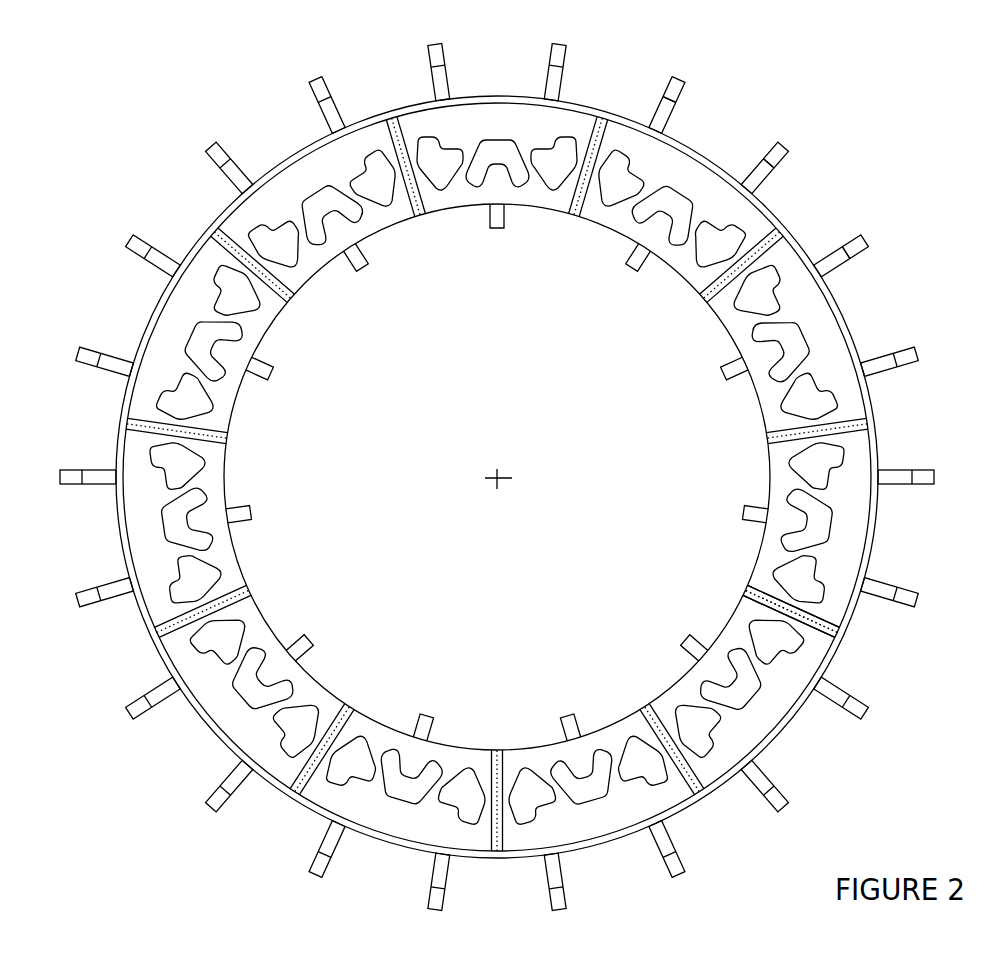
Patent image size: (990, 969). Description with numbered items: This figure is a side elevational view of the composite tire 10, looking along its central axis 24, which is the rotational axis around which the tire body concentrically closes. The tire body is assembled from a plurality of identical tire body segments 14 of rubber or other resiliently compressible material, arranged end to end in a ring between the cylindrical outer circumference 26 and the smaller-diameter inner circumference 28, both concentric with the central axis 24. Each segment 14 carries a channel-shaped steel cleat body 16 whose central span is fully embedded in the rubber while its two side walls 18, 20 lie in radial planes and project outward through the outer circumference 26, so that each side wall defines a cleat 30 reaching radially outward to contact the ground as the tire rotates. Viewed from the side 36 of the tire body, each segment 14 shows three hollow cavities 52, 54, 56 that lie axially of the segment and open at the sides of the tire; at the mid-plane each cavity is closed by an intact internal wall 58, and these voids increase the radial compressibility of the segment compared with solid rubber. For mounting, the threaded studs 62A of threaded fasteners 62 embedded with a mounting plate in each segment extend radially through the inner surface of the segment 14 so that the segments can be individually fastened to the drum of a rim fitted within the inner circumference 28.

The composite tire 10 is at (522, 474).
The tire body segment 14 is at (853, 550).
The cleat body 16 is at (920, 340).
The side wall 18 is at (784, 157).
The side wall 20 is at (785, 159).
The central axis 24 is at (502, 485).
The outer circumference 26 is at (840, 657).
The inner circumference 28 is at (773, 472).
The cleat 30 is at (678, 78).
The side of the tire body 36 is at (860, 468).
The cavity 52 is at (441, 170).
The cavity 54 is at (496, 156).
The cavity 56 is at (556, 170).
The internal wall 58 is at (612, 195).
The threaded fastener 62 is at (497, 472).
The threaded stud 62A is at (710, 635).